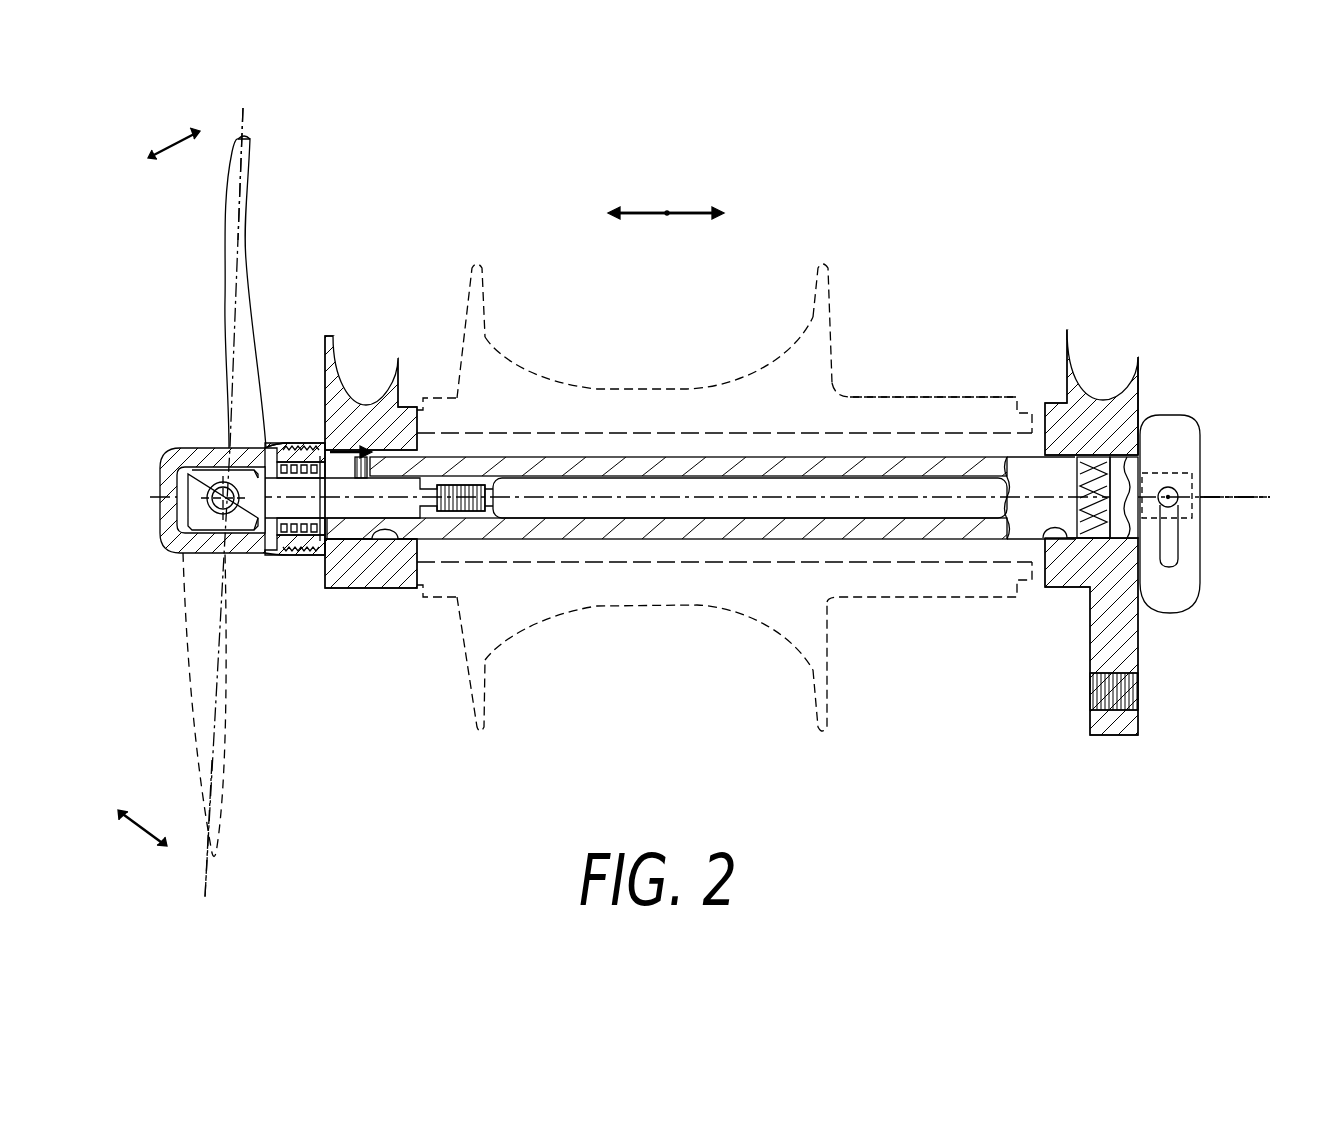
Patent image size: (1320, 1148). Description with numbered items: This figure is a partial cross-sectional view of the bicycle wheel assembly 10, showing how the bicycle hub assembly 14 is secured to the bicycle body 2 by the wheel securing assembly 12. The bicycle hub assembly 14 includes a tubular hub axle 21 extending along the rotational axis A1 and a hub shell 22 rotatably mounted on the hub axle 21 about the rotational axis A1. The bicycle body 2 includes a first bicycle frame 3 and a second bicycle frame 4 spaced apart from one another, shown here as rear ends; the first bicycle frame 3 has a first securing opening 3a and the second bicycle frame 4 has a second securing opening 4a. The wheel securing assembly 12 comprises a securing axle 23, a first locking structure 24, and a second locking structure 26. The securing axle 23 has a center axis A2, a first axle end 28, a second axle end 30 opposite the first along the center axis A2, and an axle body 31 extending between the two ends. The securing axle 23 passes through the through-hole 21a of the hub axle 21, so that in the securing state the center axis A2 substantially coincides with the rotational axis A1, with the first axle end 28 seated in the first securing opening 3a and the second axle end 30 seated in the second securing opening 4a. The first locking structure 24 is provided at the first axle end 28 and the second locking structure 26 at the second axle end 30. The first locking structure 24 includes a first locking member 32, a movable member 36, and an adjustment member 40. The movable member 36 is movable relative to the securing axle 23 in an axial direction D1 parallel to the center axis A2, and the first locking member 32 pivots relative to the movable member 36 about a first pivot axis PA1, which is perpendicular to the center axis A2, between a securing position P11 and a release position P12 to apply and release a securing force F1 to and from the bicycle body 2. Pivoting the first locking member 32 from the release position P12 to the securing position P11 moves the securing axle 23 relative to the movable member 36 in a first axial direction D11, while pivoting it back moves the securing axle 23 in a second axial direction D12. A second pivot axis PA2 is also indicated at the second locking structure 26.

The bicycle body 2 is at (1120, 325).
The first bicycle frame 3 is at (372, 390).
The first securing opening 3a is at (372, 589).
The second bicycle frame 4 is at (1100, 412).
The second securing opening 4a is at (1046, 545).
The bicycle wheel assembly 10 is at (860, 206).
The wheel securing assembly 12 is at (1185, 340).
The bicycle hub assembly 14 is at (848, 294).
The hub axle 21 is at (698, 432).
The through-hole 21a is at (731, 540).
The hub shell 22 is at (632, 388).
The securing axle 23 is at (822, 440).
The first locking structure 24 is at (217, 423).
The second locking structure 26 is at (1220, 410).
The first axle end 28 is at (417, 425).
The second axle end 30 is at (1085, 470).
The axle body 31 is at (936, 466).
The first locking member 32 is at (215, 307).
The movable member 36 is at (158, 548).
The adjustment member 40 is at (300, 430).
The securing force F1 is at (355, 445).
The axial direction D1 is at (738, 150).
The first axial direction D11 is at (652, 212).
The second axial direction D12 is at (690, 212).
The securing position P11 is at (244, 133).
The release position P12 is at (212, 876).
The first pivot axis PA1 is at (206, 470).
The second pivot axis PA2 is at (1180, 499).
The rotational axis A1 is at (1250, 472).
The center axis A2 is at (1250, 490).